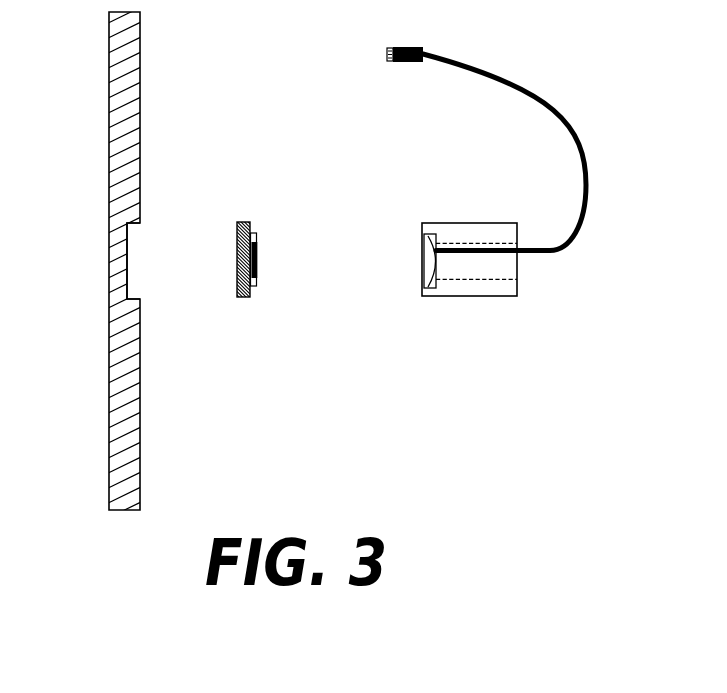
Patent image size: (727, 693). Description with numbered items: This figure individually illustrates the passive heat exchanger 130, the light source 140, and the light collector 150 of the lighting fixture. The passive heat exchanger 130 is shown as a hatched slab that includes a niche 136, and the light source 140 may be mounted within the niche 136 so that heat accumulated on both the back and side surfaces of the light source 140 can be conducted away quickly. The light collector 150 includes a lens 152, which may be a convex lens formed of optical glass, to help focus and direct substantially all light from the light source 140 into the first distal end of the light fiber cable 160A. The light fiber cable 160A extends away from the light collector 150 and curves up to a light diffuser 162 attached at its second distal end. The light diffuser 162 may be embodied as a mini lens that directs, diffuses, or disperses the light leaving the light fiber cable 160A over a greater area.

The passive heat exchanger 130 is at (136, 455).
The niche 136 is at (152, 249).
The light source 140 is at (256, 262).
The light collector 150 is at (506, 297).
The lens 152 is at (430, 257).
The light fiber cable 160A is at (532, 93).
The light diffuser 162 is at (385, 56).